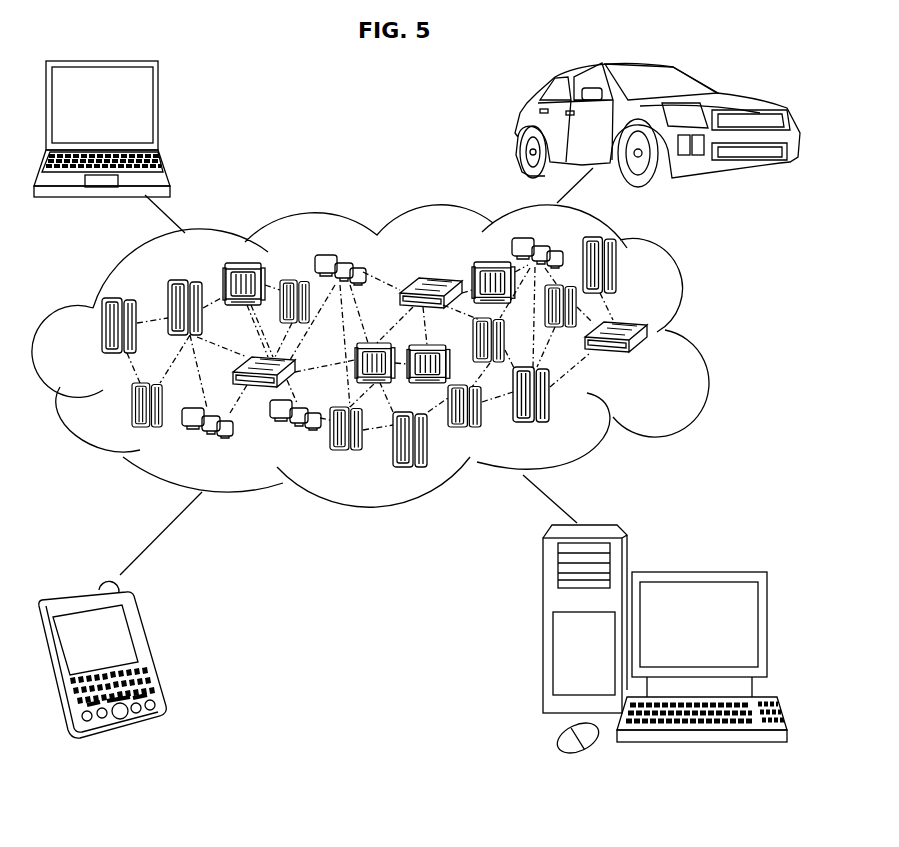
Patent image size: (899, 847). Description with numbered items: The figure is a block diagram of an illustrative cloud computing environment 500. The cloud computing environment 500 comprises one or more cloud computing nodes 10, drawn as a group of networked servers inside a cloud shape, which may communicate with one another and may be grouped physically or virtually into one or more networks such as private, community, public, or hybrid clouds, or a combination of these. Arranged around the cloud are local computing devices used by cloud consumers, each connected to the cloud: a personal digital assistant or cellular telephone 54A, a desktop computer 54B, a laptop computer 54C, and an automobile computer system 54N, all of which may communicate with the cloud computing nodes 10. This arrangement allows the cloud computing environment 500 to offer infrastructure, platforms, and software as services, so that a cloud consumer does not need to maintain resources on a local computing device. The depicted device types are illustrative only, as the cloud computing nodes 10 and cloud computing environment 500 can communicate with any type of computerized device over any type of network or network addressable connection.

The cloud computing environment 500 is at (698, 337).
The cloud computing nodes 10 is at (657, 367).
The personal digital assistant (PDA) or cellular telephone 54A is at (153, 647).
The desktop computer 54B is at (695, 571).
The laptop computer 54C is at (158, 112).
The automobile computer system 54N is at (515, 122).